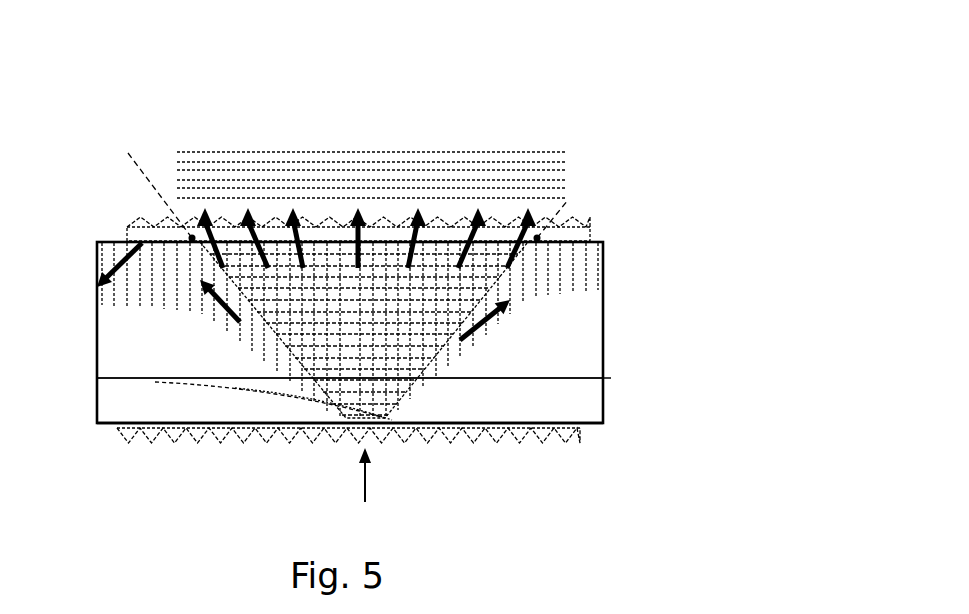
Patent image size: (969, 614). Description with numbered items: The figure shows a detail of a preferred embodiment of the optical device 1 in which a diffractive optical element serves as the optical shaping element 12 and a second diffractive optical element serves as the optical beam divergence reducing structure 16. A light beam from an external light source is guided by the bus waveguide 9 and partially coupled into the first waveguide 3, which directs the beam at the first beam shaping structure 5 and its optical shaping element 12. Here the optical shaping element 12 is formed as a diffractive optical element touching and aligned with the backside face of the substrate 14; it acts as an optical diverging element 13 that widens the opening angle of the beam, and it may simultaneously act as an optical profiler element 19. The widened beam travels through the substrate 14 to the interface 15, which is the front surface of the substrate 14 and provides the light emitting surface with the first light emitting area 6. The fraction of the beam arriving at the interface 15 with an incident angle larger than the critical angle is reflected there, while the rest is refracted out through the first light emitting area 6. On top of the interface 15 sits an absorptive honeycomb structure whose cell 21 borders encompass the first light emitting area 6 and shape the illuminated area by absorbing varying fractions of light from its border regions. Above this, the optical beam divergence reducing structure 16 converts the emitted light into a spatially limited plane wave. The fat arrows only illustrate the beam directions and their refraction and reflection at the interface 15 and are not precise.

The optical device 1 is at (726, 114).
The first waveguide 3 is at (262, 393).
The first beam shaping structure 5 is at (367, 497).
The first light emitting area 6 is at (326, 232).
The bus waveguide 9 is at (105, 378).
The optical shaping element 12 is at (426, 427).
The optical diverging element 13 is at (170, 425).
The substrate 14 is at (540, 400).
The interface 15 is at (103, 232).
The optical beam divergence reducing structure 16 is at (572, 227).
The optical profiler element 19 is at (196, 428).
The cell 21 is at (192, 238).